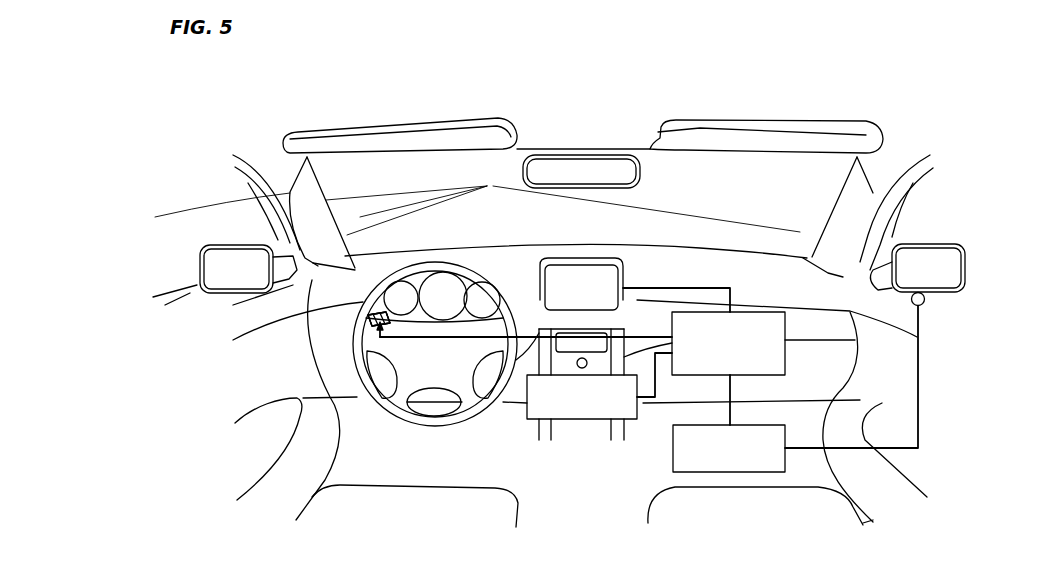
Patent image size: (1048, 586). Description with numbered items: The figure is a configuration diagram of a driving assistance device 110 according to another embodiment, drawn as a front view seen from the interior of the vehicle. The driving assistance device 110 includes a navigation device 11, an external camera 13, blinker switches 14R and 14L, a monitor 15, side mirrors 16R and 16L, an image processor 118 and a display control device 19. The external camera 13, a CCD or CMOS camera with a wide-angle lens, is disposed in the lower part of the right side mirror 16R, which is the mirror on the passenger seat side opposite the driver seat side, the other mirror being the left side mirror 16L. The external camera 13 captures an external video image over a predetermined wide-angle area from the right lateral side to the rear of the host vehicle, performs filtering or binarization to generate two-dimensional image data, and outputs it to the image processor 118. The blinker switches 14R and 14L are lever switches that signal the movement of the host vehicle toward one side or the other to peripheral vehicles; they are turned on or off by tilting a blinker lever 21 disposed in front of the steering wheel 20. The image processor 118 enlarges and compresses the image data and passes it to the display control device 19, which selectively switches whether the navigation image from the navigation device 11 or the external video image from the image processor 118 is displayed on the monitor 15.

The driving assistance device 110 is at (540, 108).
The blinker lever 21 is at (387, 316).
The blinker switch 14R is at (420, 273).
The blinker switch 14L is at (441, 273).
The monitor 15 is at (597, 258).
The display control device 19 is at (761, 311).
The navigation device 11 is at (583, 420).
The image processor 118 is at (753, 472).
The external camera 13 is at (925, 300).
The side mirror 16L is at (200, 262).
The side mirror 16R is at (967, 257).
The steering wheel 20 is at (433, 426).